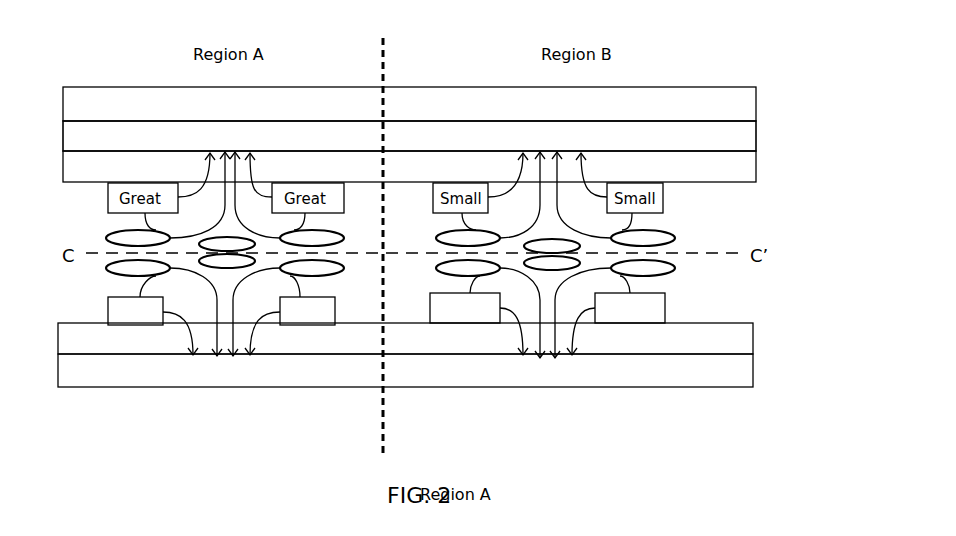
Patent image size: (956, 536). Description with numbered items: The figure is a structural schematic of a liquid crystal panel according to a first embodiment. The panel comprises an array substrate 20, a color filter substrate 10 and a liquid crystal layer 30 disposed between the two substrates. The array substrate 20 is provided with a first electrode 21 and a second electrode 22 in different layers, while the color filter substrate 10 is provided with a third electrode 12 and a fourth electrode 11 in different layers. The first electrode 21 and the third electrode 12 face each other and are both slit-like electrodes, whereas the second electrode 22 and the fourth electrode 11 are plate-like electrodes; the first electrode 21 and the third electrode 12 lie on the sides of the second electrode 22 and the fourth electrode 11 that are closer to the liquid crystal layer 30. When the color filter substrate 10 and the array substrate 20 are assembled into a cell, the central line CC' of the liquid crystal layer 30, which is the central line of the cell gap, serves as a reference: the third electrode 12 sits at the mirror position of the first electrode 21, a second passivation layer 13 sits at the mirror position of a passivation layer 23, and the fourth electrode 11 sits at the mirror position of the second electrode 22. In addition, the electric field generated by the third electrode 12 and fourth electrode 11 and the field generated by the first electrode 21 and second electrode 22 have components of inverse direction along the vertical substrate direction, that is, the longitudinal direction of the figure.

The color filter substrate 10 is at (453, 143).
The fourth electrode 11 is at (727, 137).
The second passivation layer 13 is at (727, 170).
The third electrode 12 is at (672, 198).
The array substrate 20 is at (449, 333).
The first electrode 21 is at (665, 307).
The passivation layer 23 is at (733, 343).
The second electrode 22 is at (733, 374).
The liquid crystal layer 30 is at (700, 242).